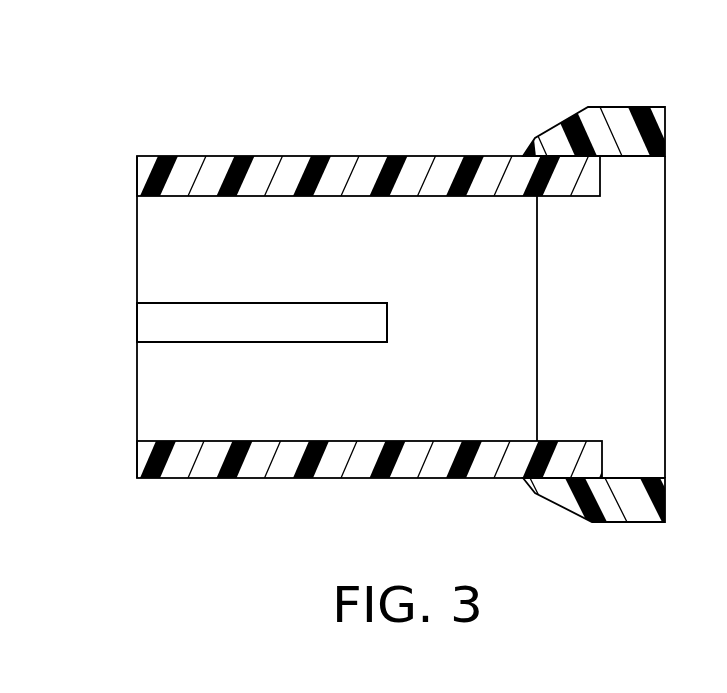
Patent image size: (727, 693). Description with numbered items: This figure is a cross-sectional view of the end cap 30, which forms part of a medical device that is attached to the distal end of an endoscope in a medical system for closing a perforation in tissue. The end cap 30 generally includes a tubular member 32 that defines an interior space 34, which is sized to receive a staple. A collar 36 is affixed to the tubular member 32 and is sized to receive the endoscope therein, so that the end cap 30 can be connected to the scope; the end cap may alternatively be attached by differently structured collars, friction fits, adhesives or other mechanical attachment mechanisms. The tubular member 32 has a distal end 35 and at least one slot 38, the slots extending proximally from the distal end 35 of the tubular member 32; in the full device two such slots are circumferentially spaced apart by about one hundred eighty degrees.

The end cap 30 is at (125, 128).
The tubular member 32 is at (275, 155).
The interior space 34 is at (287, 413).
The distal end 35 is at (138, 456).
The collar 36 is at (641, 503).
The slot 38 is at (177, 327).